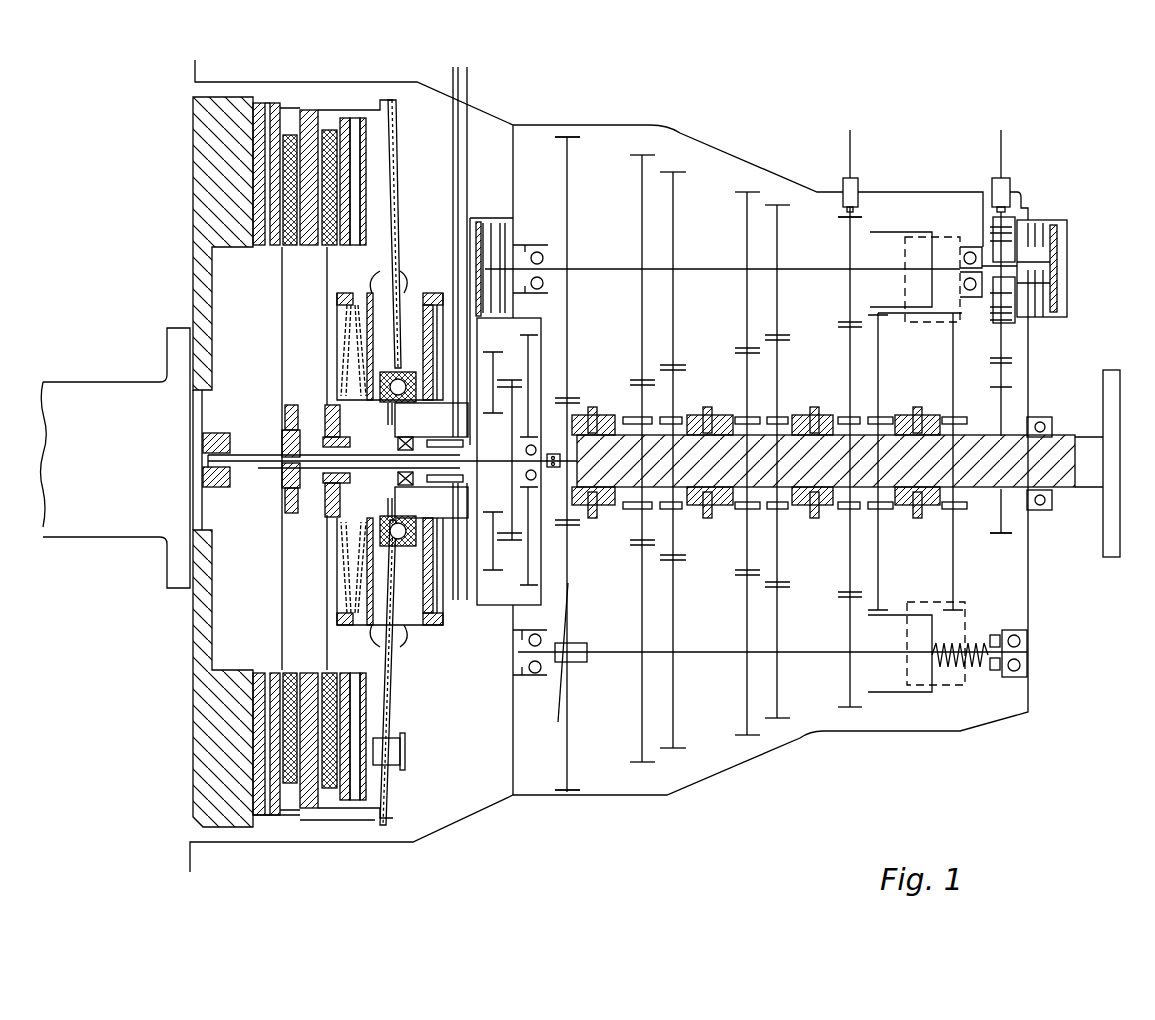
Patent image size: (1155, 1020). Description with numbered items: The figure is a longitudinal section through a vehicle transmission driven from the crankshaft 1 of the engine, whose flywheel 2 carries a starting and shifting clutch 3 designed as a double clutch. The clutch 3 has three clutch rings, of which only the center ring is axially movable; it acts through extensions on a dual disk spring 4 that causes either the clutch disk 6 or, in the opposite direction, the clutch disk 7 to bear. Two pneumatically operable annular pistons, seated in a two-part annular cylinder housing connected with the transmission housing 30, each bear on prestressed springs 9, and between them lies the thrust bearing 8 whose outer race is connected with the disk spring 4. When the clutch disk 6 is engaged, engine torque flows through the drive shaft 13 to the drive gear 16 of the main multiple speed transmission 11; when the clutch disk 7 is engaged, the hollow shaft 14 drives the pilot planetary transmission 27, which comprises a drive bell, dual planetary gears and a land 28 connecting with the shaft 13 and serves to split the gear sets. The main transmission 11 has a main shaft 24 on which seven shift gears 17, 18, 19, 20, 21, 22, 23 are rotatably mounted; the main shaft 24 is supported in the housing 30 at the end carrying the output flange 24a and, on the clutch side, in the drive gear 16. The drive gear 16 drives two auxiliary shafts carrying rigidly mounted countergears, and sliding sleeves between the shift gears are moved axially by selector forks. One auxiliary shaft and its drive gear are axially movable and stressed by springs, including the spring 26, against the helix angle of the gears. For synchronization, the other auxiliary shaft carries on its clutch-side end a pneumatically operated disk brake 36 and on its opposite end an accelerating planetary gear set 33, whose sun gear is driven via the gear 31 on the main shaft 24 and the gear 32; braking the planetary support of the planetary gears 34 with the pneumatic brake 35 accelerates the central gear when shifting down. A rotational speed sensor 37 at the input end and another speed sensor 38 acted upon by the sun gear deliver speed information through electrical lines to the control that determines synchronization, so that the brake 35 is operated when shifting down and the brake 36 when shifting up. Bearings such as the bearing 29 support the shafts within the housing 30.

The crankshaft 1 is at (118, 530).
The flywheel 2 is at (193, 180).
The starting and shifting clutch 3 is at (330, 98).
The dual disk spring 4 is at (382, 822).
The clutch disk 6 is at (282, 287).
The clutch disk 7 is at (327, 268).
The thrust bearing 8 is at (362, 545).
The prestressed springs 9 is at (425, 357).
The main multiple speed transmission 11 is at (735, 780).
The drive shaft 13 is at (262, 467).
The hollow shaft 14 is at (400, 440).
The drive gear 16 is at (550, 420).
The shift gear 17 is at (640, 408).
The shift gear 18 is at (675, 380).
The shift gear 19 is at (745, 380).
The shift gear 20 is at (783, 372).
The shift gear 21 is at (848, 380).
The shift gear 22 is at (882, 326).
The shift gear 23 is at (950, 342).
The main shaft 24 is at (1055, 470).
The output flange 24a is at (1112, 545).
The spring 26 is at (968, 668).
The planetary transmission 27 is at (490, 615).
The land 28 is at (520, 450).
The bearing 29 is at (525, 487).
The transmission housing 30 is at (228, 80).
The gear 31 is at (1003, 525).
The gear 32 is at (1005, 378).
The planetary gear set 33 is at (1057, 208).
The planetary gears 34 is at (1012, 222).
The brake 35 is at (1062, 232).
The disk brake 36 is at (492, 222).
The rotational speed sensor 37 is at (848, 178).
The rotary speed sensor 38 is at (1006, 185).